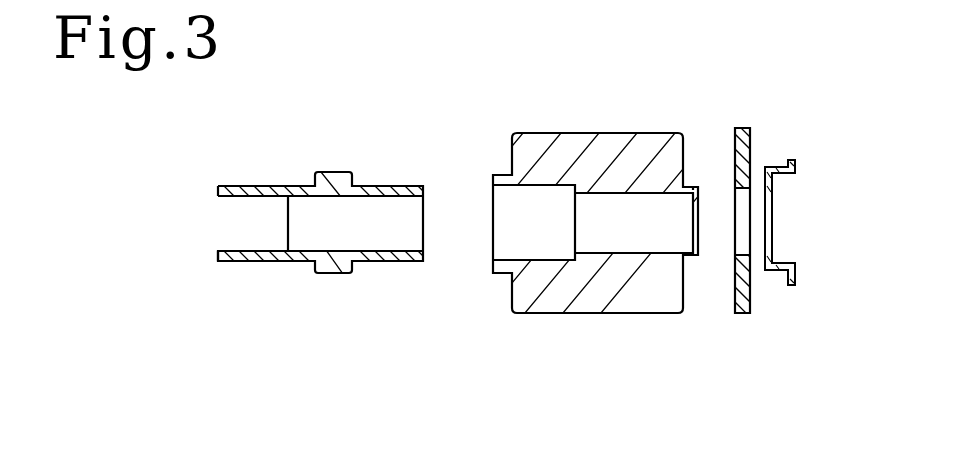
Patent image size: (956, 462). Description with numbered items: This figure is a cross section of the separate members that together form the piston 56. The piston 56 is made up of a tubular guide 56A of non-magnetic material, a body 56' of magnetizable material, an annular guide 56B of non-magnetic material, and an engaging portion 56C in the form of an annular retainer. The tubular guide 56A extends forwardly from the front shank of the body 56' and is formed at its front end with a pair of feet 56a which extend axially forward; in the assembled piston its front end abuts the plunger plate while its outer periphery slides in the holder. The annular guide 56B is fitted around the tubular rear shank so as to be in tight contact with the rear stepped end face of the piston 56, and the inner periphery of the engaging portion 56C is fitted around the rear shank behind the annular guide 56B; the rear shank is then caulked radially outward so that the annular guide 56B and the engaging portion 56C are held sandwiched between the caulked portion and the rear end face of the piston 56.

The piston 56 is at (736, 79).
The body 56' is at (543, 185).
The tubular guide 56A is at (293, 187).
The feet 56a is at (231, 252).
The annular guide 56B is at (749, 133).
The engaging portion 56C is at (776, 173).